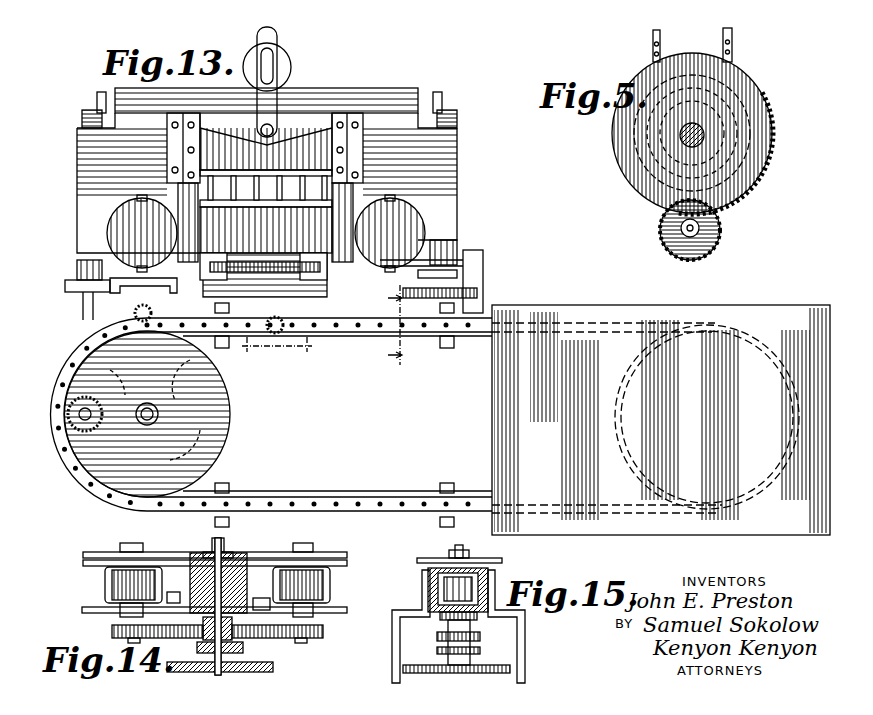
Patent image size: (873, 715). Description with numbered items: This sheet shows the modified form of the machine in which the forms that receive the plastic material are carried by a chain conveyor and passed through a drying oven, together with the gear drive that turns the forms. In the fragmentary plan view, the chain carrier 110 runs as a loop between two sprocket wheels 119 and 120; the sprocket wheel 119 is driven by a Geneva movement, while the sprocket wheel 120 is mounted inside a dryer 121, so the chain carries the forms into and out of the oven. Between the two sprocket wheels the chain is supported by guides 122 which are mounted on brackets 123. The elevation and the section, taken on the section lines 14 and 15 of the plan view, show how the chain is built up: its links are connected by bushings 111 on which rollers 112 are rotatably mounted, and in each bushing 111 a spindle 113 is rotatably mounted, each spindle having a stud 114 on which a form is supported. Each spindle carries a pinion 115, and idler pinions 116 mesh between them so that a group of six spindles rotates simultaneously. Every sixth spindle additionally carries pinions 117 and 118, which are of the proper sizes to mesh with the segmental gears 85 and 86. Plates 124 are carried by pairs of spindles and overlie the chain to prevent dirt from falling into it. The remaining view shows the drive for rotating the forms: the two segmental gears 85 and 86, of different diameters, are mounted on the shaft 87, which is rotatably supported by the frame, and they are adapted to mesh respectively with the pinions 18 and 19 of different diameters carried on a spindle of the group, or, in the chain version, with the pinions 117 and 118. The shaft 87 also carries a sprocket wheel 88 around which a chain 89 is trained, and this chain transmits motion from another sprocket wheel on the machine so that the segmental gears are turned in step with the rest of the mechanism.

In FIG. 13, the section line 14 is at (277, 356).
In FIG. 13, the section line 15 is at (385, 325).
In FIG. 5, the pinion 18 is at (700, 228).
In FIG. 5, the pinion 19 is at (720, 240).
In FIG. 5, the segmental gear 85 is at (763, 173).
In FIG. 5, the segmental gear 86 is at (768, 117).
In FIG. 5, the shaft 87 is at (687, 139).
In FIG. 5, the sprocket wheel 88 is at (697, 55).
In FIG. 5, the chain 89 is at (653, 45).
In FIG. 13, the chain carrier 110 is at (360, 500).
In FIG. 14, the chain carrier 110 is at (90, 607).
In FIG. 15, the chain carrier 110 is at (477, 618).
In FIG. 14, the bushing 111 is at (240, 585).
In FIG. 14, the roller 112 is at (245, 570).
In FIG. 15, the roller 112 is at (440, 583).
In FIG. 14, the spindle 113 is at (205, 553).
In FIG. 14, the stud 114 is at (222, 538).
In FIG. 15, the stud 114 is at (463, 547).
In FIG. 14, the pinion 115 is at (205, 641).
In FIG. 15, the pinion 115 is at (437, 636).
In FIG. 14, the idler pinion 116 is at (235, 638).
In FIG. 14, the pinion 117 is at (244, 648).
In FIG. 15, the pinion 117 is at (437, 651).
In FIG. 14, the pinion 118 is at (273, 668).
In FIG. 15, the pinion 118 is at (484, 665).
In FIG. 13, the sprocket wheel 119 is at (227, 430).
In FIG. 13, the sprocket wheel 120 is at (640, 372).
In FIG. 13, the dryer 121 is at (600, 304).
In FIG. 13, the guide 122 is at (322, 500).
In FIG. 15, the guide 122 is at (488, 572).
In FIG. 13, the bracket 123 is at (456, 480).
In FIG. 15, the bracket 123 is at (525, 663).
In FIG. 14, the plate 124 is at (330, 553).
In FIG. 15, the plate 124 is at (447, 558).